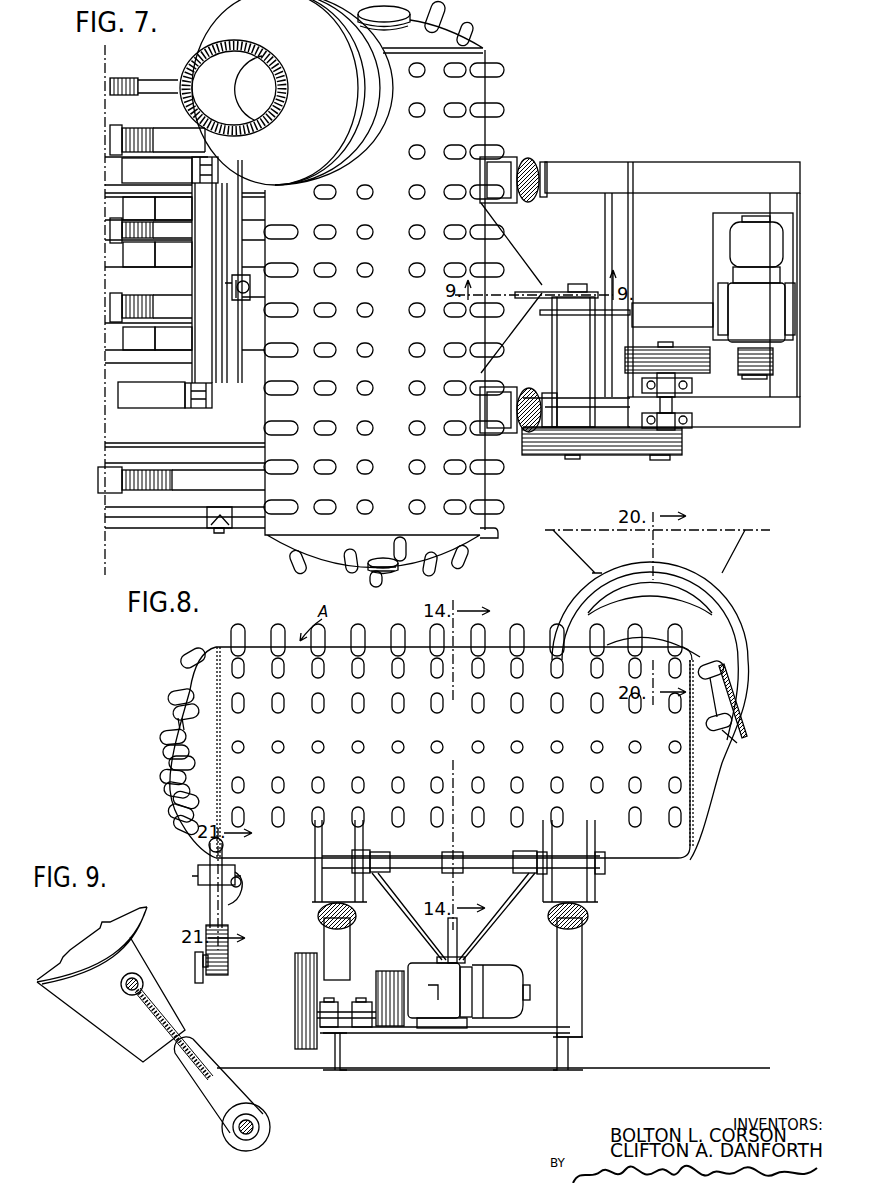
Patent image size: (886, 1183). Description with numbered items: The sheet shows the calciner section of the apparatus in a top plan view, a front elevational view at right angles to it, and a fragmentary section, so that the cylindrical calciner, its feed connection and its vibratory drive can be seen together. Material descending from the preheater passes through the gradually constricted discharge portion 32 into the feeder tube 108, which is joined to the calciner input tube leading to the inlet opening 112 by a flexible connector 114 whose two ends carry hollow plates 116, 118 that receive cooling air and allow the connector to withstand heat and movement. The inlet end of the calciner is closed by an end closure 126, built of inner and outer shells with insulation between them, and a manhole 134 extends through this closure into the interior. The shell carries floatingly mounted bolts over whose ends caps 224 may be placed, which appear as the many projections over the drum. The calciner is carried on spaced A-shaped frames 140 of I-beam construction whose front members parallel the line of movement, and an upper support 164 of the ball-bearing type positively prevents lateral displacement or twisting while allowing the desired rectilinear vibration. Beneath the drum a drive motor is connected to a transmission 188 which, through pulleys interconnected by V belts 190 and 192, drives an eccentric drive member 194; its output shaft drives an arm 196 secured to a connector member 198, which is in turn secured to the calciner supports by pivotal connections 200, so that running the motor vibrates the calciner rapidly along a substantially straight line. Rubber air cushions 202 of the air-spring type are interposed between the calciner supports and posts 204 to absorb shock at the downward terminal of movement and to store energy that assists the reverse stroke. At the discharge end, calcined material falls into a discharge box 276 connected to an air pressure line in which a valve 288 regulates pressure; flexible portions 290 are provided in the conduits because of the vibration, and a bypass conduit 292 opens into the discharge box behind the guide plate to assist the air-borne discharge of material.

In FIG. 8, the discharge portion 32 is at (736, 562).
In FIG. 7, the feeder tube 108 is at (245, 45).
In FIG. 7, the inlet opening 112 is at (256, 92).
In FIG. 7, the flexible connector 114 is at (360, 149).
In FIG. 8, the flexible connector 114 is at (709, 602).
In FIG. 7, the hollow plate 116 is at (323, 147).
In FIG. 8, the hollow plate 116 is at (746, 618).
In FIG. 7, the hollow plate 118 is at (384, 122).
In FIG. 8, the hollow plate 118 is at (750, 672).
In FIG. 7, the end closure 126 is at (483, 47).
In FIG. 8, the end closure 126 is at (712, 818).
In FIG. 7, the manhole 134 is at (405, 23).
In FIG. 8, the manhole 134 is at (742, 733).
In FIG. 7, the A-shaped frame 140 is at (212, 418).
In FIG. 7, the upper support 164 is at (258, 286).
In FIG. 7, the transmission 188 is at (762, 333).
In FIG. 8, the transmission 188 is at (420, 963).
In FIG. 7, the V belt 190 is at (730, 373).
In FIG. 8, the V belt 190 is at (387, 975).
In FIG. 7, the V belt 192 is at (636, 455).
In FIG. 8, the V belt 192 is at (295, 988).
In FIG. 8, the eccentric drive member 194 is at (350, 997).
In FIG. 7, the arm 196 is at (547, 290).
In FIG. 8, the arm 196 is at (462, 923).
In FIG. 9, the arm 196 is at (248, 1103).
In FIG. 7, the connector member 198 is at (516, 257).
In FIG. 8, the connector member 198 is at (486, 933).
In FIG. 9, the connector member 198 is at (186, 1075).
In FIG. 8, the pivotal connection 200 is at (520, 857).
In FIG. 9, the pivotal connection 200 is at (131, 996).
In FIG. 7, the rubber air cushion 202 is at (524, 165).
In FIG. 8, the rubber air cushion 202 is at (315, 911).
In FIG. 7, the post 204 is at (592, 165).
In FIG. 8, the post 204 is at (325, 945).
In FIG. 7, the cap 224 is at (372, 200).
In FIG. 8, the cap 224 is at (320, 705).
In FIG. 8, the discharge box 276 is at (193, 884).
In FIG. 7, the valve 288 is at (210, 530).
In FIG. 8, the valve 288 is at (196, 952).
In FIG. 8, the flexible portion 290 is at (216, 975).
In FIG. 8, the bypass conduit 292 is at (240, 900).